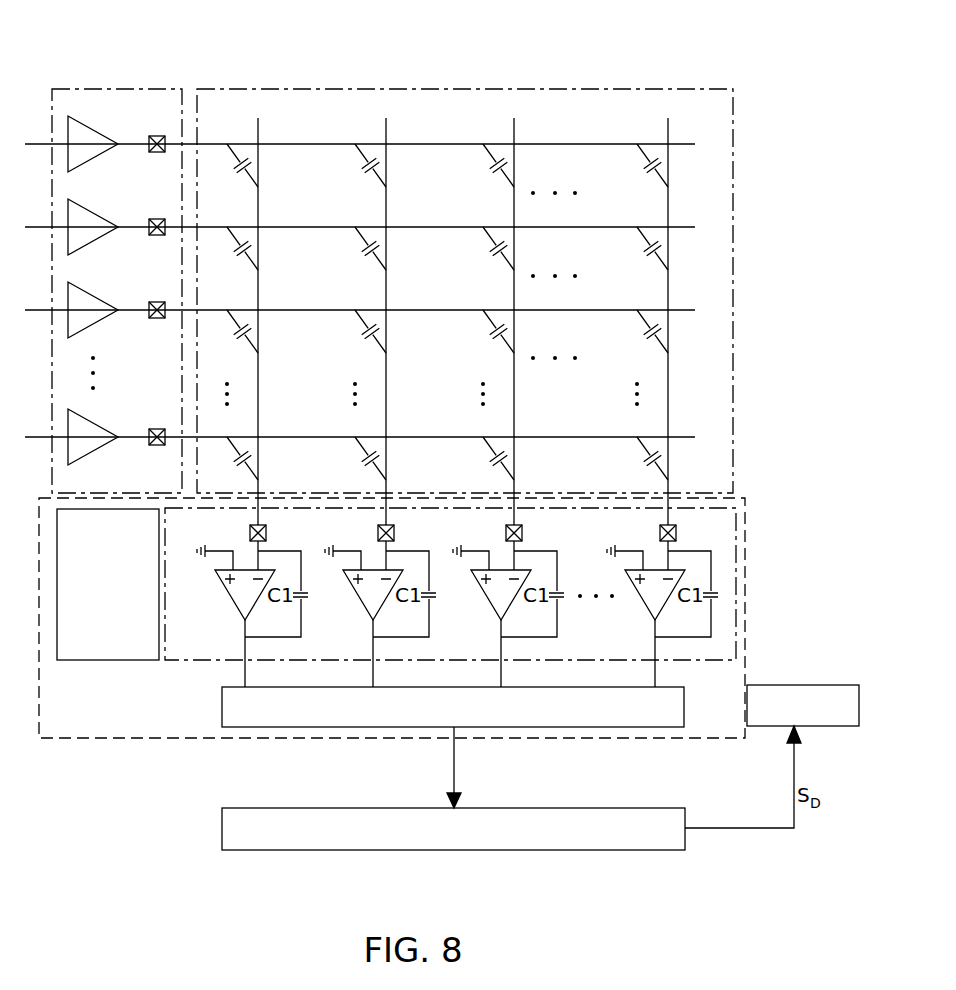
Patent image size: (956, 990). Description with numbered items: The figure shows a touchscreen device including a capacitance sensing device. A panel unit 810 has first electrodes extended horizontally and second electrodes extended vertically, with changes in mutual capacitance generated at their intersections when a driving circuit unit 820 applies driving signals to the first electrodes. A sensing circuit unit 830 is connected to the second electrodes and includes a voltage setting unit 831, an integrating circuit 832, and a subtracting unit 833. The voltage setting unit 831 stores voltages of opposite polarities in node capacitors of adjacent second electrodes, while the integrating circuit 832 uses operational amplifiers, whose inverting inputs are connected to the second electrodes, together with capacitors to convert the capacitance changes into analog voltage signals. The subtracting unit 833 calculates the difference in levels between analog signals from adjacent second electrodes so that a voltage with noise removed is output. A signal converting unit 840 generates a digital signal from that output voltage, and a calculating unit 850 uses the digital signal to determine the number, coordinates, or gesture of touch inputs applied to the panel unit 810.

The panel unit 810 is at (481, 86).
The driving circuit unit 820 is at (115, 86).
The sensing circuit unit 830 is at (423, 643).
The voltage setting unit 831 is at (100, 662).
The integrating circuit 832 is at (736, 543).
The subtracting unit 833 is at (568, 728).
The signal converting unit 840 is at (615, 850).
The calculating unit 850 is at (813, 685).